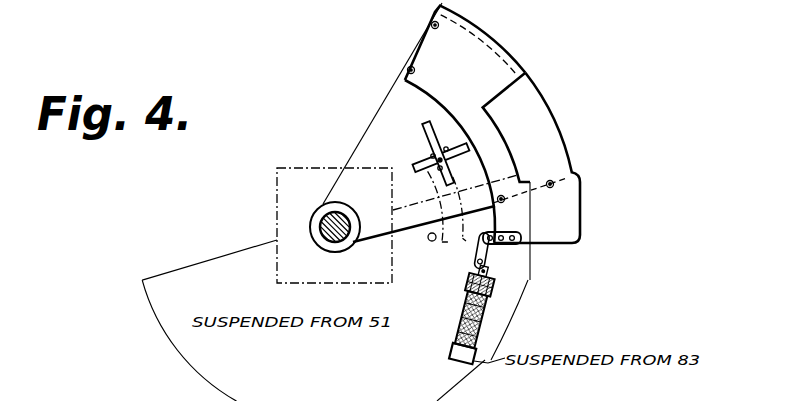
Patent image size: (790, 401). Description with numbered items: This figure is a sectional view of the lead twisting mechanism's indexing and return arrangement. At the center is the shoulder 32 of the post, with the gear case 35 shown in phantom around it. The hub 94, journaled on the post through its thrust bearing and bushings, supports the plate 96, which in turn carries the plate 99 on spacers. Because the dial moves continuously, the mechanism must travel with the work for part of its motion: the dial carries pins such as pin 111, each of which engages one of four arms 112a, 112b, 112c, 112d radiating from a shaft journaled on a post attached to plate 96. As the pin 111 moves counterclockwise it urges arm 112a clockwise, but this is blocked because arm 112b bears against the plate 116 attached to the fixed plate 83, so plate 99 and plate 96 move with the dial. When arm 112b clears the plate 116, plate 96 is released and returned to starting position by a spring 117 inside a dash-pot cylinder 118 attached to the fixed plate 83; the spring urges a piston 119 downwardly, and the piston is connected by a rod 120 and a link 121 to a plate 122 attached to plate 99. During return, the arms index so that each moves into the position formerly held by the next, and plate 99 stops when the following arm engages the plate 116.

The shoulder 32 is at (345, 212).
The gear case 35 is at (277, 193).
The hub 94 is at (313, 218).
The plate 96 is at (554, 130).
The plate 99 is at (493, 32).
The pin 111 is at (428, 240).
The arm 112a is at (414, 168).
The arm 112b is at (455, 182).
The arm 112c is at (467, 144).
The arm 112d is at (428, 114).
The plate 116 is at (390, 307).
The spring 117 is at (509, 329).
The dash-pot cylinder 118 is at (444, 366).
The piston 119 is at (509, 334).
The rod 120 is at (522, 274).
The link 121 is at (490, 257).
The plate 122 is at (513, 232).
The fixed plate 83 is at (514, 292).